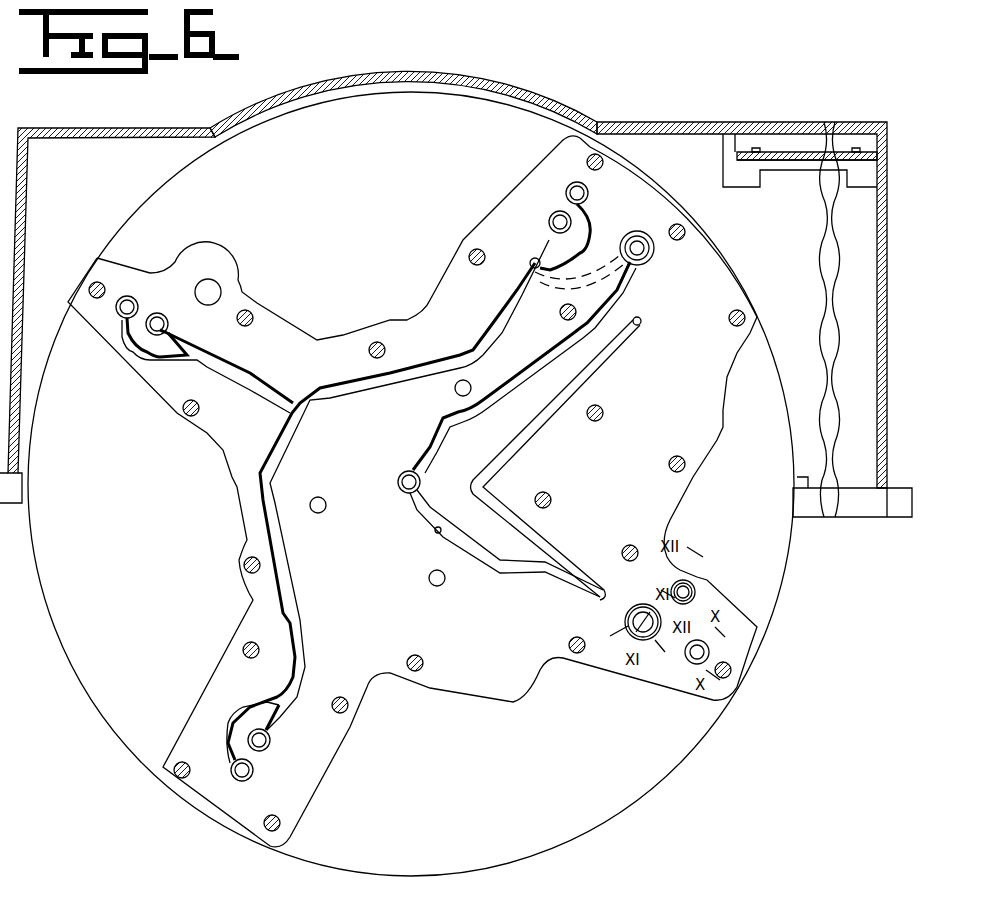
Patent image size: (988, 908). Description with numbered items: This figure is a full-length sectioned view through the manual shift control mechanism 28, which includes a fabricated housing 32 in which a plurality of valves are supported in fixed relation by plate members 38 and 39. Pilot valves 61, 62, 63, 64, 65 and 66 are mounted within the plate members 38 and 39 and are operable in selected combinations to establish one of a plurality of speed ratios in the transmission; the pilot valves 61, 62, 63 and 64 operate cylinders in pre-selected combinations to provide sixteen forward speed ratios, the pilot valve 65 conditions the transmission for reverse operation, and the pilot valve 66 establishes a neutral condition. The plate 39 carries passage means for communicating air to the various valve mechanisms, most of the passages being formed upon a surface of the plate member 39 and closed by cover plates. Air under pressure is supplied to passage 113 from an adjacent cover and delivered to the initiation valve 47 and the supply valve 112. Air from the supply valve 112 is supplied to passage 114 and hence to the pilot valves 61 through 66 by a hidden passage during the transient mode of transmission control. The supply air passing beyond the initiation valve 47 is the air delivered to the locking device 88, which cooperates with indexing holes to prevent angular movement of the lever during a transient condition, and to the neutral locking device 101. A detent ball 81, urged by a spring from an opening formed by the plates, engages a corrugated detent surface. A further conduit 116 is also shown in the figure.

The manual shift control mechanism 28 is at (767, 100).
The fabricated housing 32 is at (643, 122).
The plate member 38 is at (535, 803).
The plate member 39 is at (507, 673).
The initiation valve 47 is at (402, 472).
The pilot valve 61 is at (565, 185).
The pilot valve 62 is at (548, 215).
The pilot valve 63 is at (130, 295).
The pilot valve 64 is at (255, 771).
The pilot valve 65 is at (160, 312).
The pilot valve 66 is at (272, 739).
The detent ball 81 is at (705, 645).
The locking device 88 is at (650, 642).
The neutral locking device 101 is at (712, 578).
The supply valve 112 is at (630, 235).
The passage 113 is at (430, 452).
The passage 114 is at (490, 335).
The conduit 116 is at (516, 443).